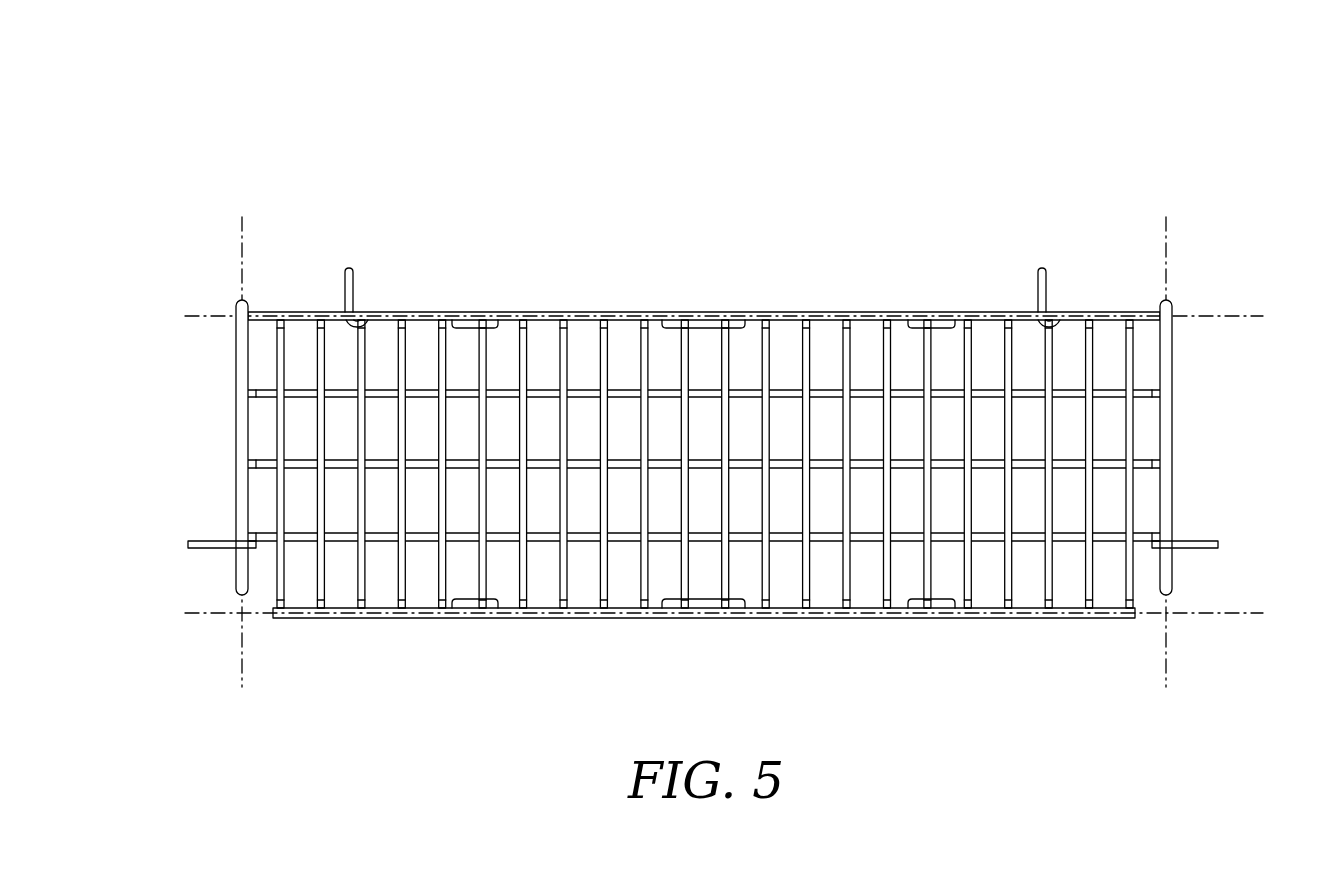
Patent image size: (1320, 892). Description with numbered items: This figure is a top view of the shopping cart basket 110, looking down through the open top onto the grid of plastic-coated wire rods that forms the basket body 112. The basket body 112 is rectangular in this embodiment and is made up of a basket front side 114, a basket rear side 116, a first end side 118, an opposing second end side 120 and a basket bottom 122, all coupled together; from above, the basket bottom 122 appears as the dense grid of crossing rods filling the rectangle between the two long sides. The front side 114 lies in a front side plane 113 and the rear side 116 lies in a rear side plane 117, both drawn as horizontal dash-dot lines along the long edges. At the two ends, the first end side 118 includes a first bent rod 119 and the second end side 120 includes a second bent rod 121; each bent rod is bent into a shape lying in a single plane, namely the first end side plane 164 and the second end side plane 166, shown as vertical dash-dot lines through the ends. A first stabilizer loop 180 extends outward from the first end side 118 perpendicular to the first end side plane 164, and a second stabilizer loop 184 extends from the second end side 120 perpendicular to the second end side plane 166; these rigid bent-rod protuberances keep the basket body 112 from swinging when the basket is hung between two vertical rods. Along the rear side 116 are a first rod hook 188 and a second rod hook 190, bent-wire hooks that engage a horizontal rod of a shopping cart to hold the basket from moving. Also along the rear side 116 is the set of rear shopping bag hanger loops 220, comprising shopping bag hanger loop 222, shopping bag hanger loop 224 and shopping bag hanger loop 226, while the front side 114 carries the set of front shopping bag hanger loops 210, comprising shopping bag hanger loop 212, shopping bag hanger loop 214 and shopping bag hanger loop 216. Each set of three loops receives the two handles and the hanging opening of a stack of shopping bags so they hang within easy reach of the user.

The shopping cart basket 110 is at (633, 136).
The basket body 112 is at (704, 457).
The front side plane 113 is at (1195, 613).
The basket front side 114 is at (704, 674).
The basket rear side 116 is at (704, 262).
The rear side plane 117 is at (1200, 316).
The first end side 118 is at (184, 448).
The first bent rod 119 is at (236, 465).
The second end side 120 is at (1223, 448).
The second bent rod 121 is at (1172, 393).
The basket bottom 122 is at (810, 360).
The first end side plane 164 is at (242, 263).
The second end side plane 166 is at (1166, 262).
The first stabilizer loop 180 is at (197, 548).
The second stabilizer loop 184 is at (1203, 548).
The first rod hook 188 is at (349, 268).
The second rod hook 190 is at (1046, 275).
The set of front shopping bag hanger loops 210 is at (651, 660).
The shopping bag hanger loop 212 is at (468, 606).
The shopping bag hanger loop 214 is at (704, 606).
The shopping bag hanger loop 216 is at (928, 606).
The set of rear shopping bag hanger loops 220 is at (676, 250).
The shopping bag hanger loop 222 is at (476, 322).
The shopping bag hanger loop 224 is at (707, 322).
The shopping bag hanger loop 226 is at (935, 322).